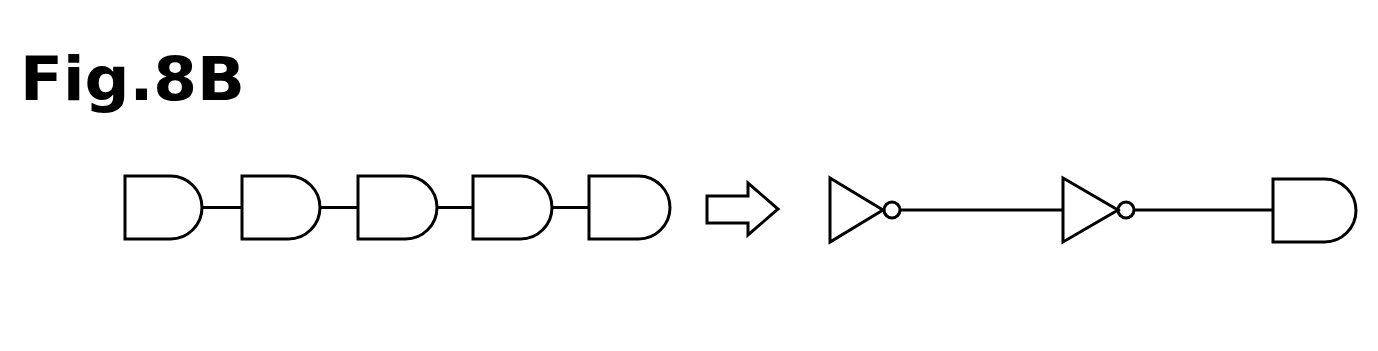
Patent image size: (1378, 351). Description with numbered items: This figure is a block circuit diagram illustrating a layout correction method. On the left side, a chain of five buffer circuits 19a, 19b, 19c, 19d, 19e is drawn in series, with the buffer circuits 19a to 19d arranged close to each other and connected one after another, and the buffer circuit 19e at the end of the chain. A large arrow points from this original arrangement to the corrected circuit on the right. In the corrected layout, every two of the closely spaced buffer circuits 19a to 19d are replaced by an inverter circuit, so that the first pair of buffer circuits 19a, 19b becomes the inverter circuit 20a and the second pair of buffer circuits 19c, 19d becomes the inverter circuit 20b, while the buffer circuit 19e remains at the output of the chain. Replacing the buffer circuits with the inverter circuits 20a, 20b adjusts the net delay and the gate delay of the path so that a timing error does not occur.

The buffer circuit 19a is at (148, 239).
The buffer circuit 19b is at (265, 239).
The buffer circuit 19c is at (382, 239).
The buffer circuit 19d is at (500, 239).
The buffer circuit 19e is at (617, 239).
The inverter circuit 20a is at (862, 228).
The inverter circuit 20b is at (1093, 228).